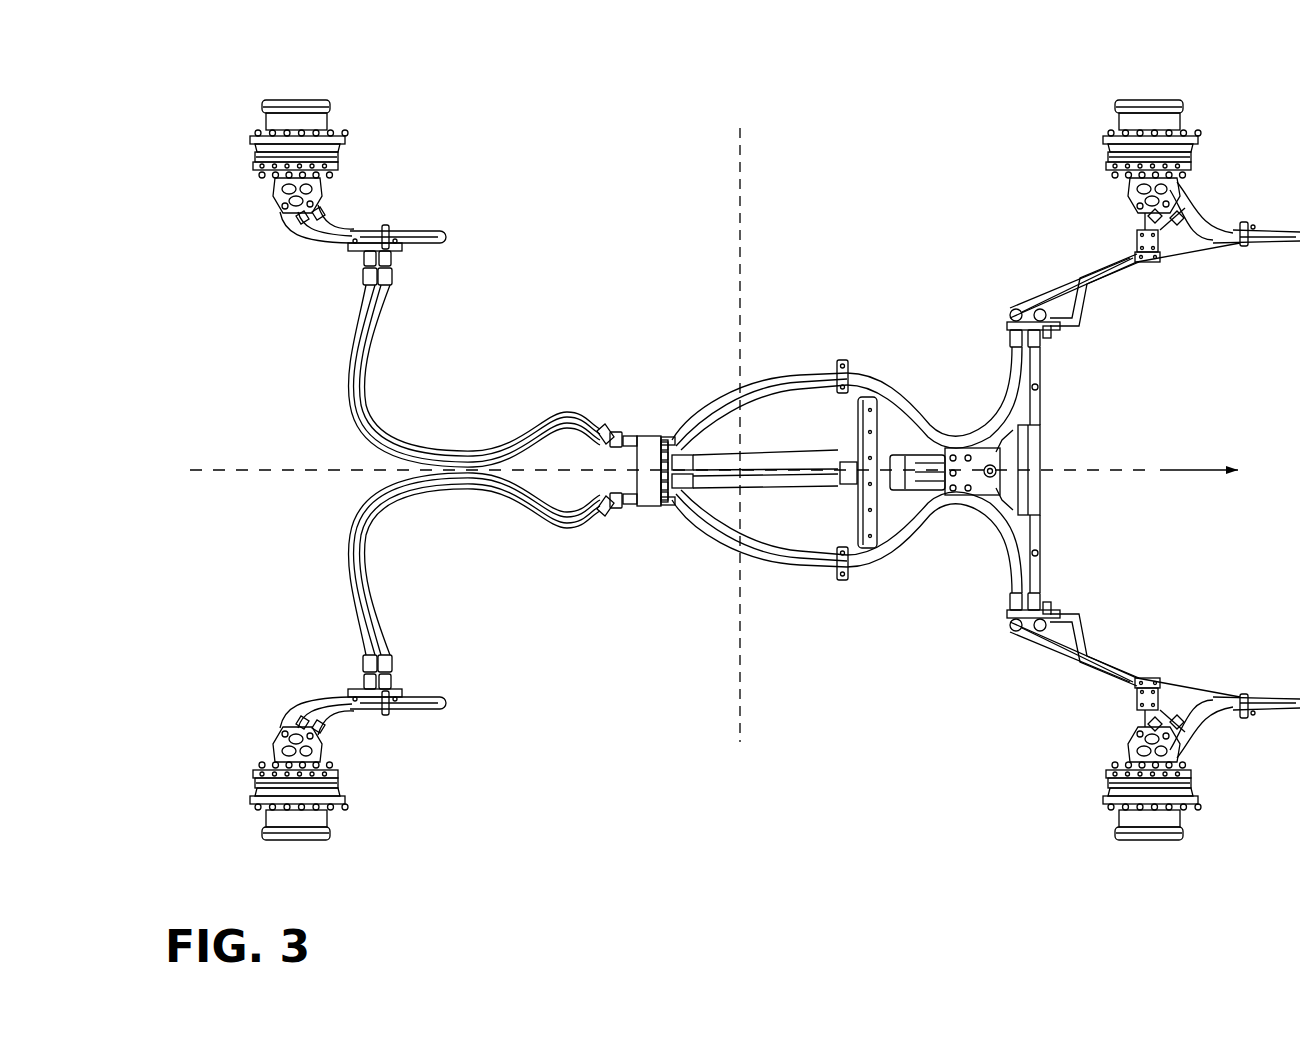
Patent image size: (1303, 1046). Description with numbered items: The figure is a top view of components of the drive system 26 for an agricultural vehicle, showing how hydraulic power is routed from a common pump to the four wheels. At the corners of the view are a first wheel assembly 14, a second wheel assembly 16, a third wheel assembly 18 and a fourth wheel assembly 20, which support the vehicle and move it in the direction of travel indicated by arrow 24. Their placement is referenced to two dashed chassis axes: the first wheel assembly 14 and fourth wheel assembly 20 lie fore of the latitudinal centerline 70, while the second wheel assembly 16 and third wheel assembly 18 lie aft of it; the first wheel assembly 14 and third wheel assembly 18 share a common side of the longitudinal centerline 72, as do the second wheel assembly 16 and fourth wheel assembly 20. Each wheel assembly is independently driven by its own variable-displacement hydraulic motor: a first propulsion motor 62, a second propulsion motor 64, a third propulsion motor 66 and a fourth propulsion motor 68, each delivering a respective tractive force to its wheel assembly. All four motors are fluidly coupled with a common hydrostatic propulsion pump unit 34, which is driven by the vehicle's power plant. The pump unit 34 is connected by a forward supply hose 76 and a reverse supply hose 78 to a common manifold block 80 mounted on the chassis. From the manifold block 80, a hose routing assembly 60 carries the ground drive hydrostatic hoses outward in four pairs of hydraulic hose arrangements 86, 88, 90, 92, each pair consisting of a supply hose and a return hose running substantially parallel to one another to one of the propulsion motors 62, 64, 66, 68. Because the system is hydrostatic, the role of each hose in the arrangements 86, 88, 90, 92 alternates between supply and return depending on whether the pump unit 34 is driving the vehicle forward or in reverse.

The first wheel assembly 14 is at (1150, 107).
The second wheel assembly 16 is at (302, 833).
The third wheel assembly 18 is at (305, 107).
The fourth wheel assembly 20 is at (1163, 830).
The arrow 24 is at (1192, 470).
The drive system 26 is at (866, 152).
The hydrostatic propulsion pump unit 34 is at (1052, 453).
The hose routing assembly 60 is at (574, 395).
The first propulsion motor 62 is at (1133, 190).
The second propulsion motor 64 is at (288, 745).
The third propulsion motor 66 is at (280, 195).
The fourth propulsion motor 68 is at (1130, 750).
The latitudinal centerline 70 is at (741, 192).
The longitudinal centerline 72 is at (270, 467).
The forward supply hose 76 is at (770, 485).
The reverse supply hose 78 is at (781, 457).
The common manifold block 80 is at (655, 506).
The hydraulic hose arrangement 86 is at (990, 398).
The hydraulic hose arrangement 88 is at (398, 530).
The hydraulic hose arrangement 90 is at (433, 425).
The hydraulic hose arrangement 92 is at (985, 537).